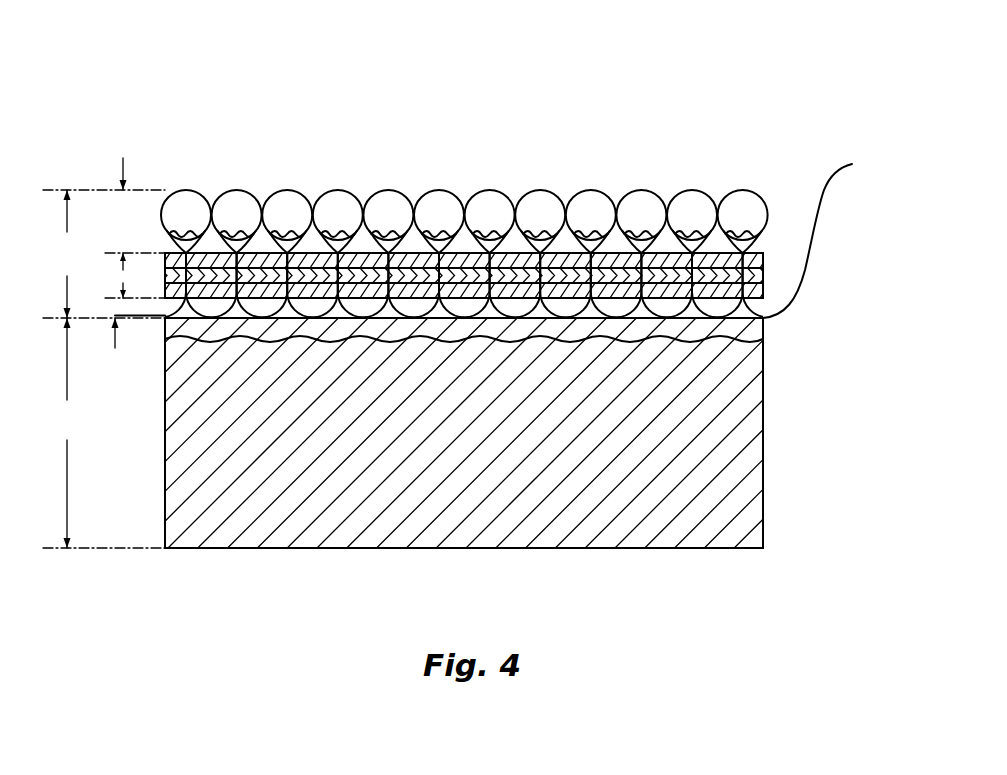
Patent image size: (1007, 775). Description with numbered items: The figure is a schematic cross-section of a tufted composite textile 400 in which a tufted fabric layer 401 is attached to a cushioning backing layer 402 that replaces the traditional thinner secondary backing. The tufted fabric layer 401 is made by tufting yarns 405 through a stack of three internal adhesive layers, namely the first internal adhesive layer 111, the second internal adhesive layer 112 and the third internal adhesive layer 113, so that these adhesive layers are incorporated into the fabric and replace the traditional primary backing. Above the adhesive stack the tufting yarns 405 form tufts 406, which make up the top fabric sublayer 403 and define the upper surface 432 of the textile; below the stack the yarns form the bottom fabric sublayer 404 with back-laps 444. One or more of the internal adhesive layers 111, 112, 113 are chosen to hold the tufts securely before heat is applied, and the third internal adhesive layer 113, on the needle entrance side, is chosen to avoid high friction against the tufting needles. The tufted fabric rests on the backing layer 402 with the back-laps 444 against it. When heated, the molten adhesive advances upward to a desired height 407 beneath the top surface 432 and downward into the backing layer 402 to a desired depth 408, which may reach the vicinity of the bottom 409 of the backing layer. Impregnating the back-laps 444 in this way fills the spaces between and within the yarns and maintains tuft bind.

The tufted composite textile 400 is at (207, 144).
The tufted fabric layer 401 is at (104, 254).
The backing layer 402 is at (104, 433).
The top fabric sublayer 403 is at (135, 223).
The bottom fabric sublayer 404 is at (128, 342).
The tufting yarns 405 is at (826, 177).
The tufts 406 is at (343, 190).
The height 407 is at (637, 234).
The depth 408 is at (642, 342).
The bottom of the backing layer 409 is at (607, 549).
The first internal adhesive layer 111 is at (762, 260).
The second internal adhesive layer 112 is at (762, 275).
The third internal adhesive layer 113 is at (762, 290).
The upper surface 432 is at (519, 198).
The back-laps 444 is at (763, 341).